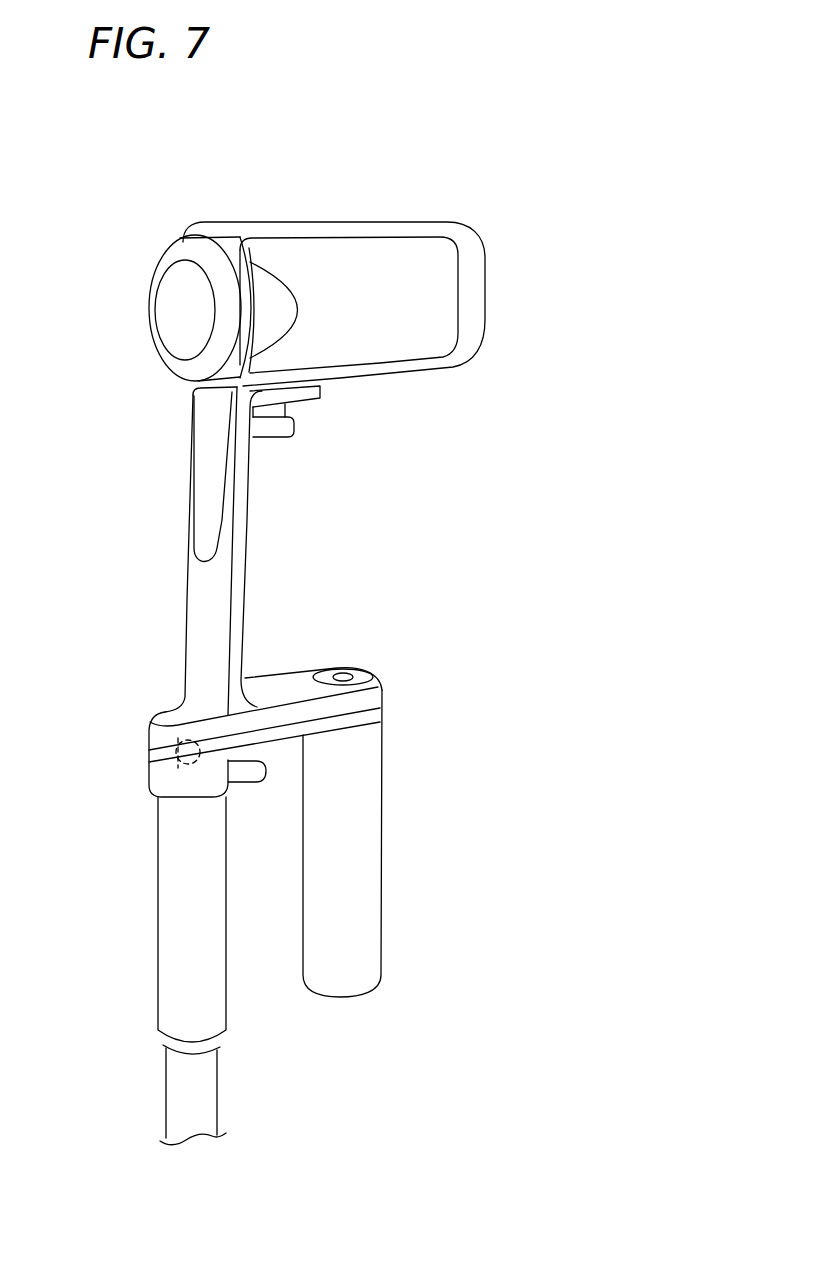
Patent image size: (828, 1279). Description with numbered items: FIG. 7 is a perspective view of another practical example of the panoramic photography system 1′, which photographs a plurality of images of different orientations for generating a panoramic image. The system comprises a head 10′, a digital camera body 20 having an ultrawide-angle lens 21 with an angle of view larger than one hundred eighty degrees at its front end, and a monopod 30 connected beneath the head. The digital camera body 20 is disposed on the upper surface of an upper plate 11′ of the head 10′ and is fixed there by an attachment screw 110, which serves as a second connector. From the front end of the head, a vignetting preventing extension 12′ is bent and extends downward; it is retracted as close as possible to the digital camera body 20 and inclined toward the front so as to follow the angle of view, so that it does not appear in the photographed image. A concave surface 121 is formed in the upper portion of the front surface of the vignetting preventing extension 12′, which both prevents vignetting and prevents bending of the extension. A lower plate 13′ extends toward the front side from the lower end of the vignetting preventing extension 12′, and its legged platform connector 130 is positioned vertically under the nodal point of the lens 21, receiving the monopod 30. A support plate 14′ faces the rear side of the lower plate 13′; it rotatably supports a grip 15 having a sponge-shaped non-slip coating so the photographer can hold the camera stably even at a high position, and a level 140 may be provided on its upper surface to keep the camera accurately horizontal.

The panoramic photography system 1′ is at (596, 246).
The head 10′ is at (249, 535).
The upper plate 11′ is at (321, 392).
The attachment screw 110 is at (283, 438).
The vignetting preventing extension 12′ is at (184, 570).
The concave surface 121 is at (208, 433).
The lower plate 13′ is at (158, 714).
The legged platform connector 130 is at (145, 759).
The support plate 14′ is at (291, 673).
The level 140 is at (364, 669).
The grip 15 is at (382, 763).
The digital camera body 20 is at (437, 220).
The ultrawide-angle lens 21 is at (176, 331).
The monopod 30 is at (157, 926).